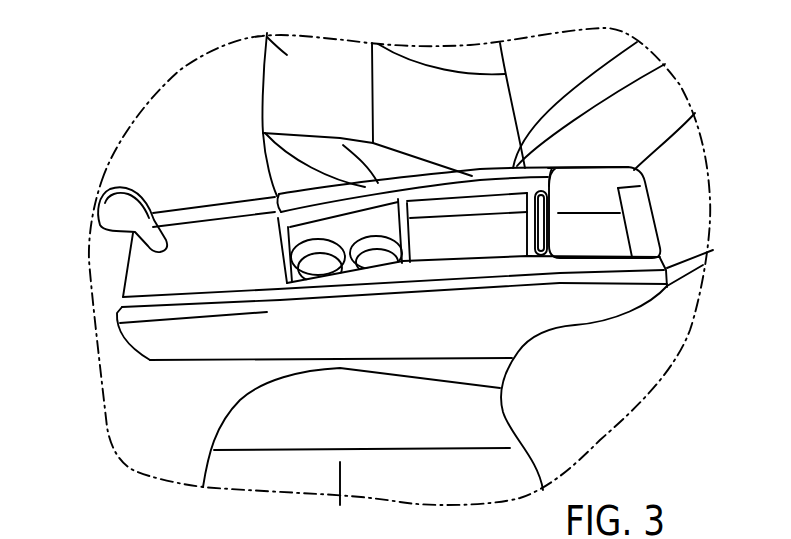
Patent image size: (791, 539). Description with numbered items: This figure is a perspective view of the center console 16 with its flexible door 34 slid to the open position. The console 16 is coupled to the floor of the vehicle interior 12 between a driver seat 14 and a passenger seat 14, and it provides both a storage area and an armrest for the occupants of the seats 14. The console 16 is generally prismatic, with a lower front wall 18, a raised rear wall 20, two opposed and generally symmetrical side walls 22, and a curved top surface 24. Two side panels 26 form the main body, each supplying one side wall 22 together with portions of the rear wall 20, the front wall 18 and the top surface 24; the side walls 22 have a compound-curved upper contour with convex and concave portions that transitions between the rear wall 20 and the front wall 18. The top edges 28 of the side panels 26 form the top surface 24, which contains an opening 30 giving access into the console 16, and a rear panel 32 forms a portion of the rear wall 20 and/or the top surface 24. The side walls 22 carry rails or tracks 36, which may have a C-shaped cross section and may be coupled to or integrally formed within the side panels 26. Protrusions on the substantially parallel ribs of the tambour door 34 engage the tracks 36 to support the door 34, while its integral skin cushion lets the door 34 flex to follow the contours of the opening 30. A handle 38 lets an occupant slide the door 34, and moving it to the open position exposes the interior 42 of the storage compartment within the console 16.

The vehicle interior 12 is at (221, 98).
The seat 14 is at (267, 37).
The center console 16 is at (212, 394).
The front wall 18 is at (128, 264).
The rear wall 20 is at (713, 250).
The side wall 22 is at (344, 143).
The top surface 24 is at (593, 177).
The side panel 26 is at (181, 352).
The top edge 28 is at (117, 310).
The opening 30 is at (517, 262).
The rear panel 32 is at (645, 215).
The door 34 is at (552, 168).
The track 36 is at (493, 167).
The handle 38 is at (548, 232).
The interior of the storage compartment 42 is at (484, 222).